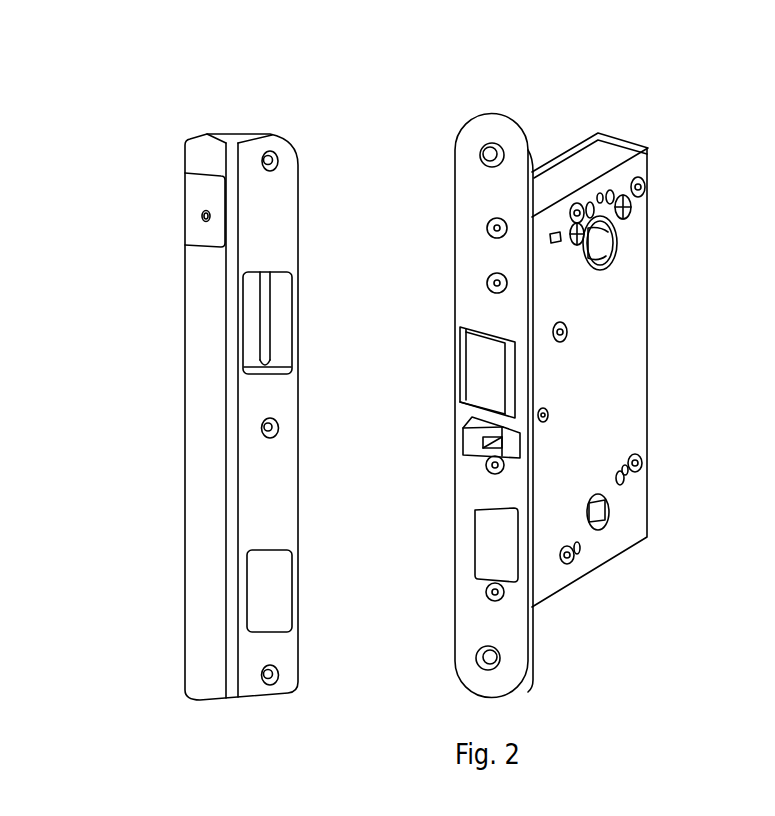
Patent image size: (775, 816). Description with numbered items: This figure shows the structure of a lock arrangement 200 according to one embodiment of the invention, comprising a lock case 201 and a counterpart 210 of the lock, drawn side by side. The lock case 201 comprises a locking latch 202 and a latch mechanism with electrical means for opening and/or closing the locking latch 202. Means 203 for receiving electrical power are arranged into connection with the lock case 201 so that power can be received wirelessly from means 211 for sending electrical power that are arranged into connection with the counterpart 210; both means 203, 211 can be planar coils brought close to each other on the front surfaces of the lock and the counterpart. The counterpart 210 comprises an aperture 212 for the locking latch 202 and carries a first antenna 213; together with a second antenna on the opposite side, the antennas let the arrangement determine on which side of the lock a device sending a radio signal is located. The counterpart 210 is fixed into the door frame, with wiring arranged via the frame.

The lock assembly 200 is at (214, 101).
The lock case 201 is at (617, 270).
The locking latch 202 is at (490, 358).
The means for receiving electrical power 203 is at (497, 557).
The counterpart of the lock 210 is at (213, 445).
The means for sending electrical power 211 is at (263, 595).
The aperture 212 is at (277, 316).
The first antenna 213 is at (205, 227).